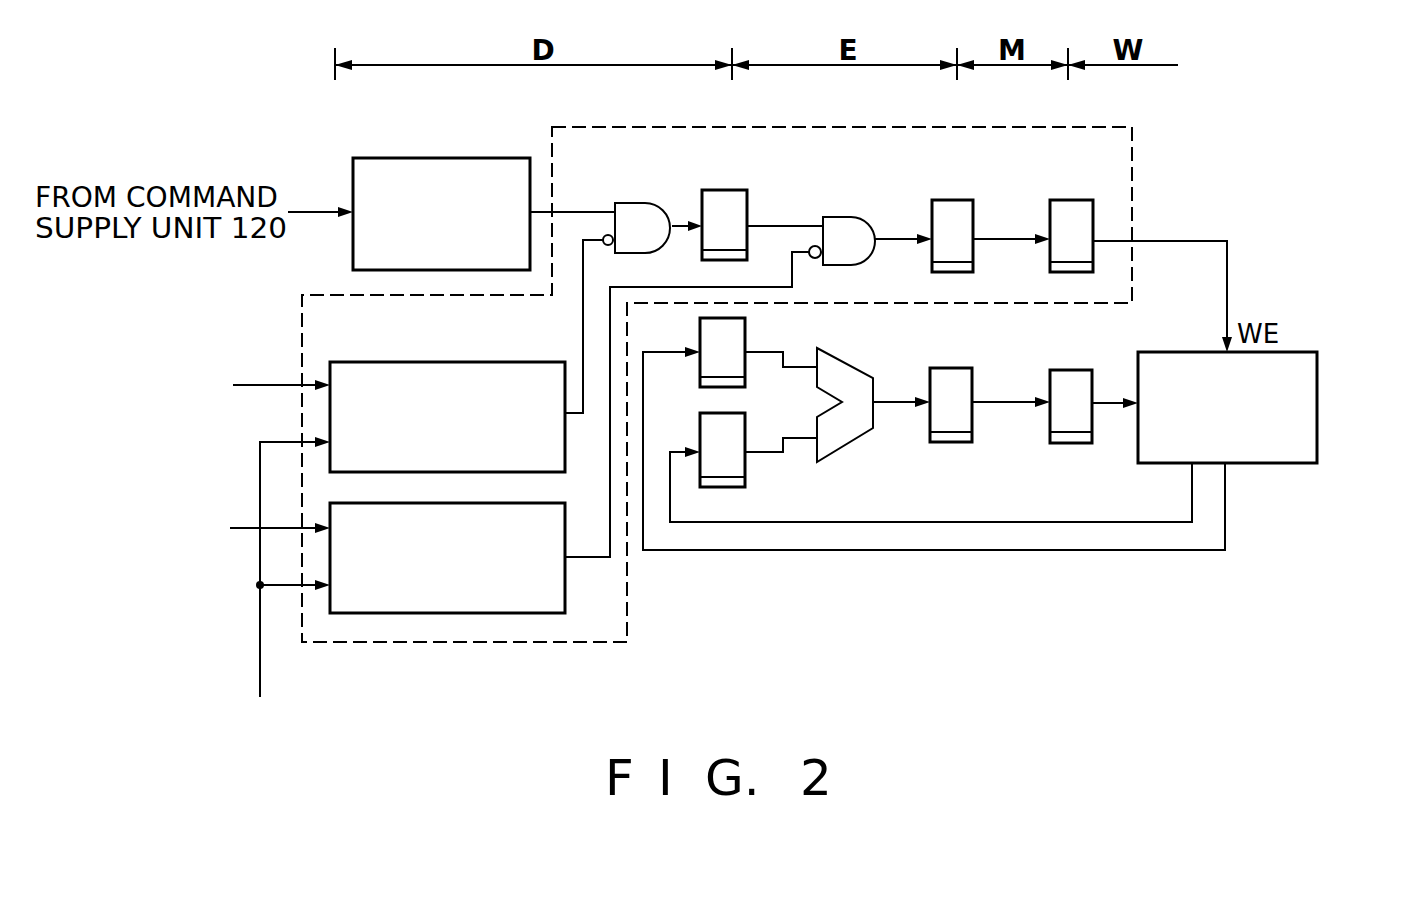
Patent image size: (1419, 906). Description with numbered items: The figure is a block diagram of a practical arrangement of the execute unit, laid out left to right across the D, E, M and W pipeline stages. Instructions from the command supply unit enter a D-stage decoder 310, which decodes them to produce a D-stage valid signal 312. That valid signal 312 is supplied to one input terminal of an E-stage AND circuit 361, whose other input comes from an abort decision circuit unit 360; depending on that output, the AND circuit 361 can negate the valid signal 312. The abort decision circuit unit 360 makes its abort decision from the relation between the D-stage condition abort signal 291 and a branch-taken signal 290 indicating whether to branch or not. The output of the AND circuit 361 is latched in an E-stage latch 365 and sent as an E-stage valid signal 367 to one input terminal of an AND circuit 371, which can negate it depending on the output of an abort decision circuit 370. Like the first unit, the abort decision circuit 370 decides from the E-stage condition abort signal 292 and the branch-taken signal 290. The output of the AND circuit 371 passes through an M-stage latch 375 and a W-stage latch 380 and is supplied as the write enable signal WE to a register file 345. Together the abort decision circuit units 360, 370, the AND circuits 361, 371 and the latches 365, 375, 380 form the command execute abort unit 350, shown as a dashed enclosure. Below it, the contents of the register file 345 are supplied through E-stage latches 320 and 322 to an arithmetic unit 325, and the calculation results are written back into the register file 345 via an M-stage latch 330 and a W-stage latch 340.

The D-stage decoder 310 is at (483, 170).
The D-stage valid signal 312 is at (583, 205).
The E-stage AND circuit 361 is at (645, 215).
The E-stage latch 365 is at (732, 200).
The E-stage valid signal 367 is at (805, 225).
The AND circuit 371 is at (863, 225).
The M-stage latch 375 is at (960, 210).
The W-stage latch 380 is at (1078, 210).
The E-stage latch 320 is at (735, 335).
The E-stage latch 322 is at (735, 478).
The arithmetic unit 325 is at (852, 385).
The M-stage latch 330 is at (960, 378).
The W-stage latch 340 is at (1080, 378).
The register file 345 is at (1305, 377).
The command execute abort unit 350 is at (562, 642).
The abort decision circuit unit 360 is at (482, 368).
The abort decision circuit 370 is at (535, 515).
The branch-taken signal 290 is at (258, 645).
The D-stage condition abort signal 291 is at (258, 385).
The E-stage condition abort signal 292 is at (247, 528).